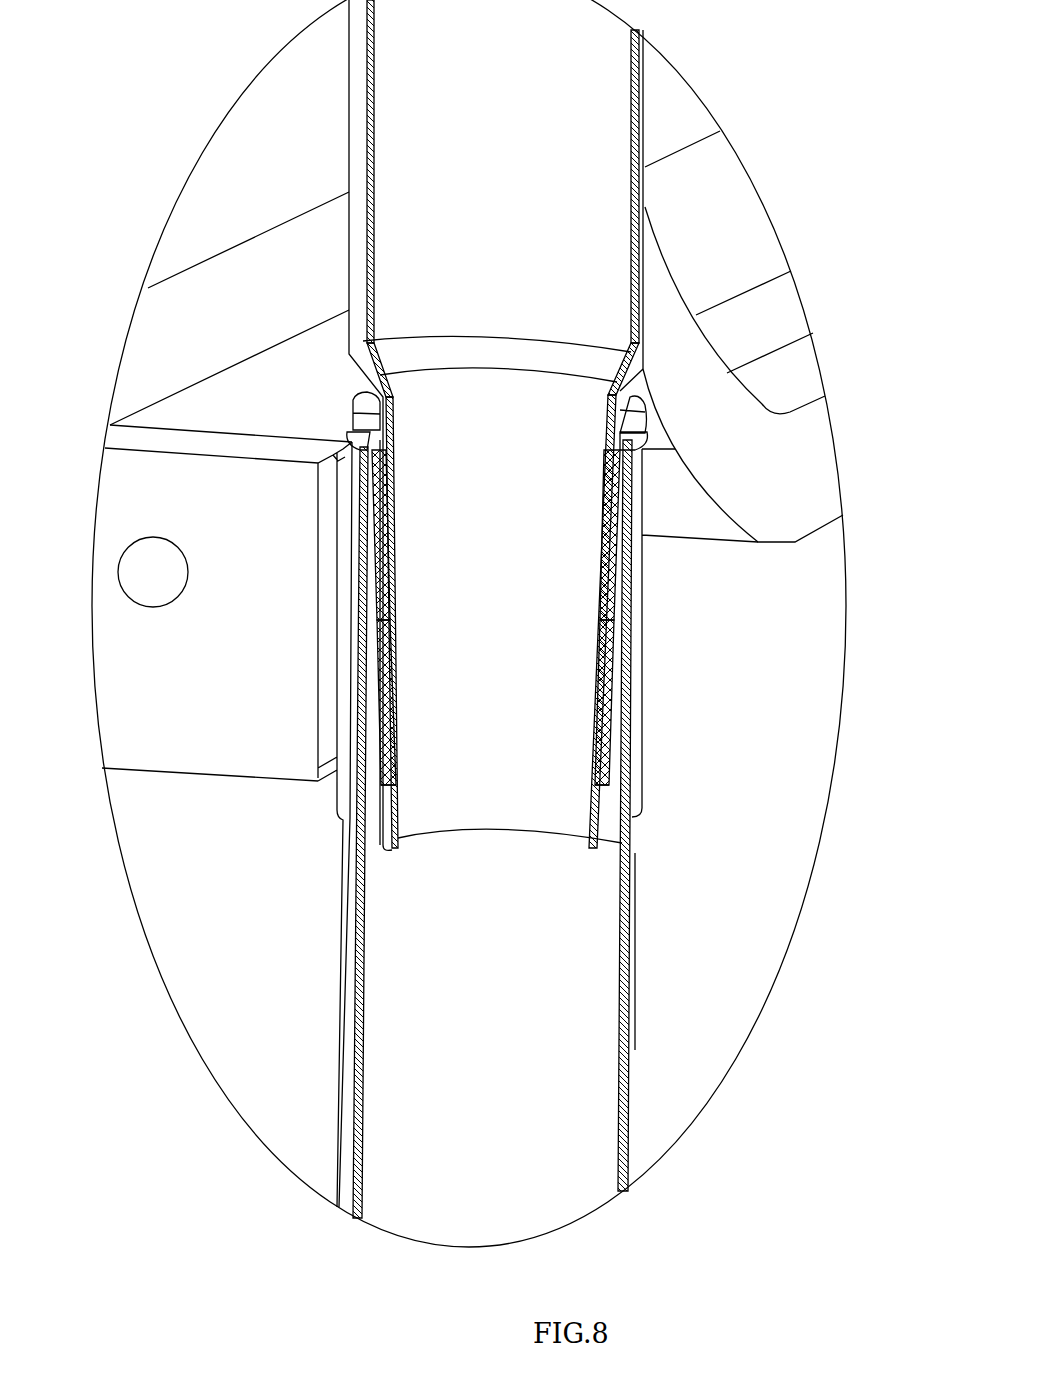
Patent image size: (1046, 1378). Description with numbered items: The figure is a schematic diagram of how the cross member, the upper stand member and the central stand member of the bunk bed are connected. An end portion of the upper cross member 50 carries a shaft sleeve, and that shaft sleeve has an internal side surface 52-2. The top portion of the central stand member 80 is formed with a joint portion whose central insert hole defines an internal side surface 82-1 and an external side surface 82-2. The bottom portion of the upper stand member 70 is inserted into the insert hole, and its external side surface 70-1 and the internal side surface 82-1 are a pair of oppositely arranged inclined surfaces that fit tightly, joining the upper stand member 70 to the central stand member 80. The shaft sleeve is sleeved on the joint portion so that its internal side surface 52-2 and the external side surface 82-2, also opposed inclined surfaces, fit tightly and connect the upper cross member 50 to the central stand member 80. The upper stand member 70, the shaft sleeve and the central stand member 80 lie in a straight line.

The upper cross member 50 is at (218, 698).
The upper stand member 70 is at (570, 80).
The external side surface of the bottom portion of the upper stand member 70-1 is at (607, 569).
The central stand member 80 is at (580, 1165).
The internal side surface of the joint portion 82-1 is at (607, 628).
The external side surface of the joint portion 82-2 is at (627, 752).
The internal side surface of the shaft sleeve 52-2 is at (615, 777).